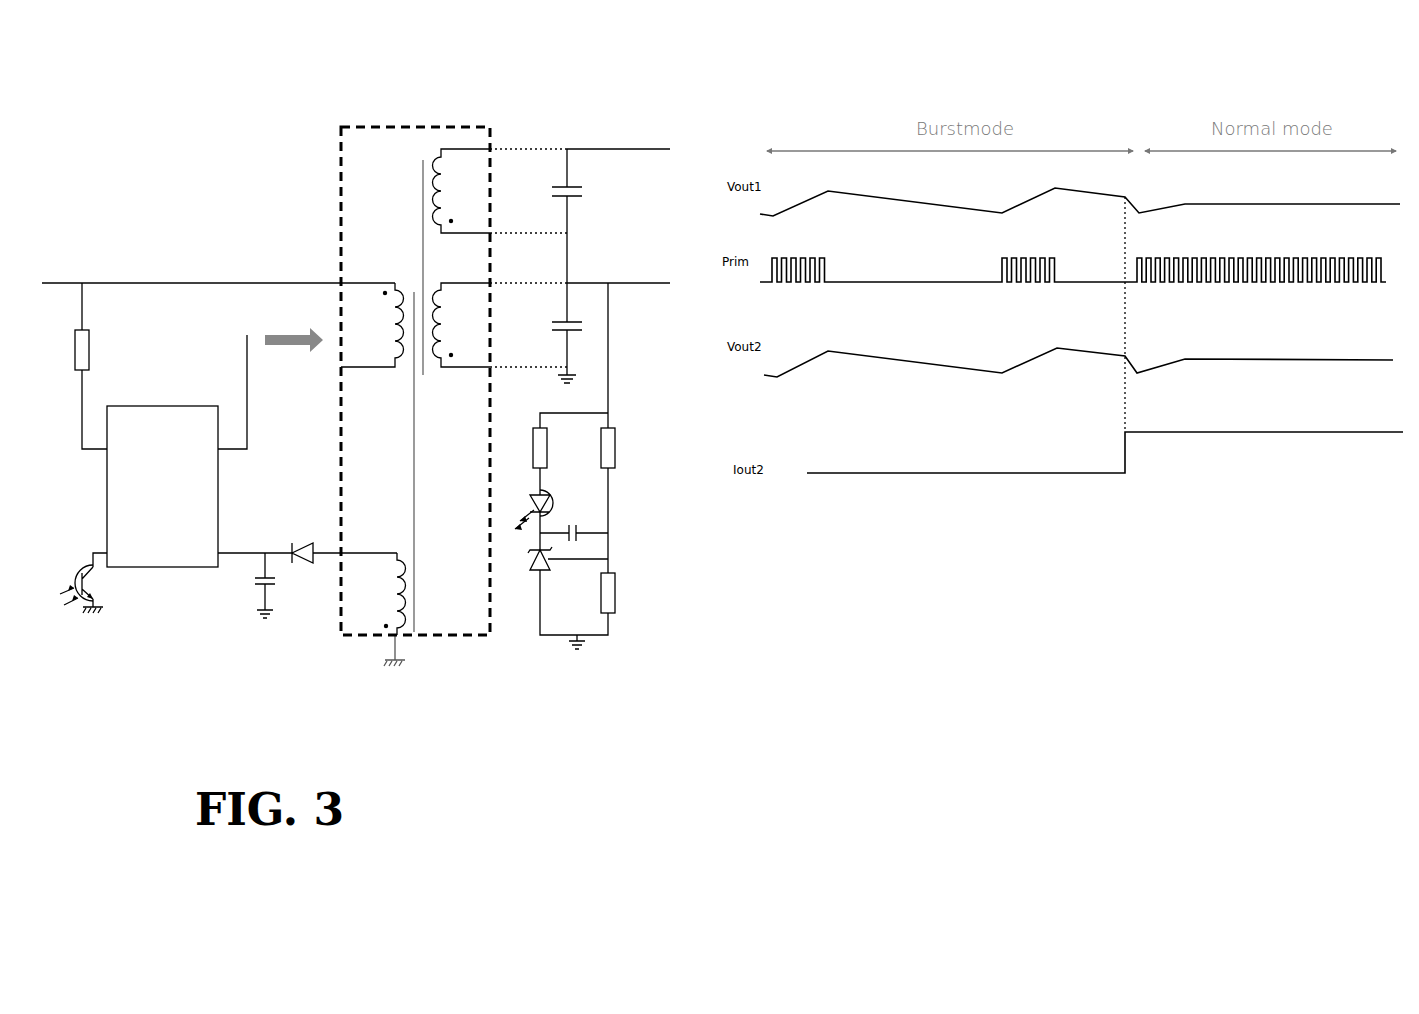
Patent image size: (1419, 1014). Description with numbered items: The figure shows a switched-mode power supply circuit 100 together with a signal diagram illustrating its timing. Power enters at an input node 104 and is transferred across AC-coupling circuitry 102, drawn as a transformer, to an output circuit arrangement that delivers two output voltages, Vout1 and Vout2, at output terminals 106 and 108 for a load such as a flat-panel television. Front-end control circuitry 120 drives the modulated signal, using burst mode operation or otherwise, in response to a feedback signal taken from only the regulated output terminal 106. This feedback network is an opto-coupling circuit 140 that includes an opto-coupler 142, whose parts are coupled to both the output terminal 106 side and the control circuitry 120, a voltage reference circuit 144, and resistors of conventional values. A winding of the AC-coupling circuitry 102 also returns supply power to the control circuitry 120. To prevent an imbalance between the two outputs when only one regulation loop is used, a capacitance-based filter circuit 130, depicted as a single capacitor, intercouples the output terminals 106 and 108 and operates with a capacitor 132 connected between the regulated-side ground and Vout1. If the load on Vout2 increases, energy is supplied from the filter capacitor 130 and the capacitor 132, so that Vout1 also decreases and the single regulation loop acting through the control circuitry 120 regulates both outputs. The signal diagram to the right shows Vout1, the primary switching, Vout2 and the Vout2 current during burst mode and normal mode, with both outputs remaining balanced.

The switched-mode power supply circuit 100 is at (503, 33).
The AC-coupling circuitry 102 is at (450, 124).
The input node 104 is at (113, 283).
The output terminal 106 is at (661, 284).
The output terminal 108 is at (655, 150).
The front-end control circuitry 120 is at (130, 406).
The capacitance-based filter circuit 130 is at (535, 173).
The capacitor 132 is at (588, 335).
The opto-coupling circuit 140 is at (612, 548).
The opto-coupler 142 is at (555, 505).
The voltage reference circuit 144 is at (528, 562).